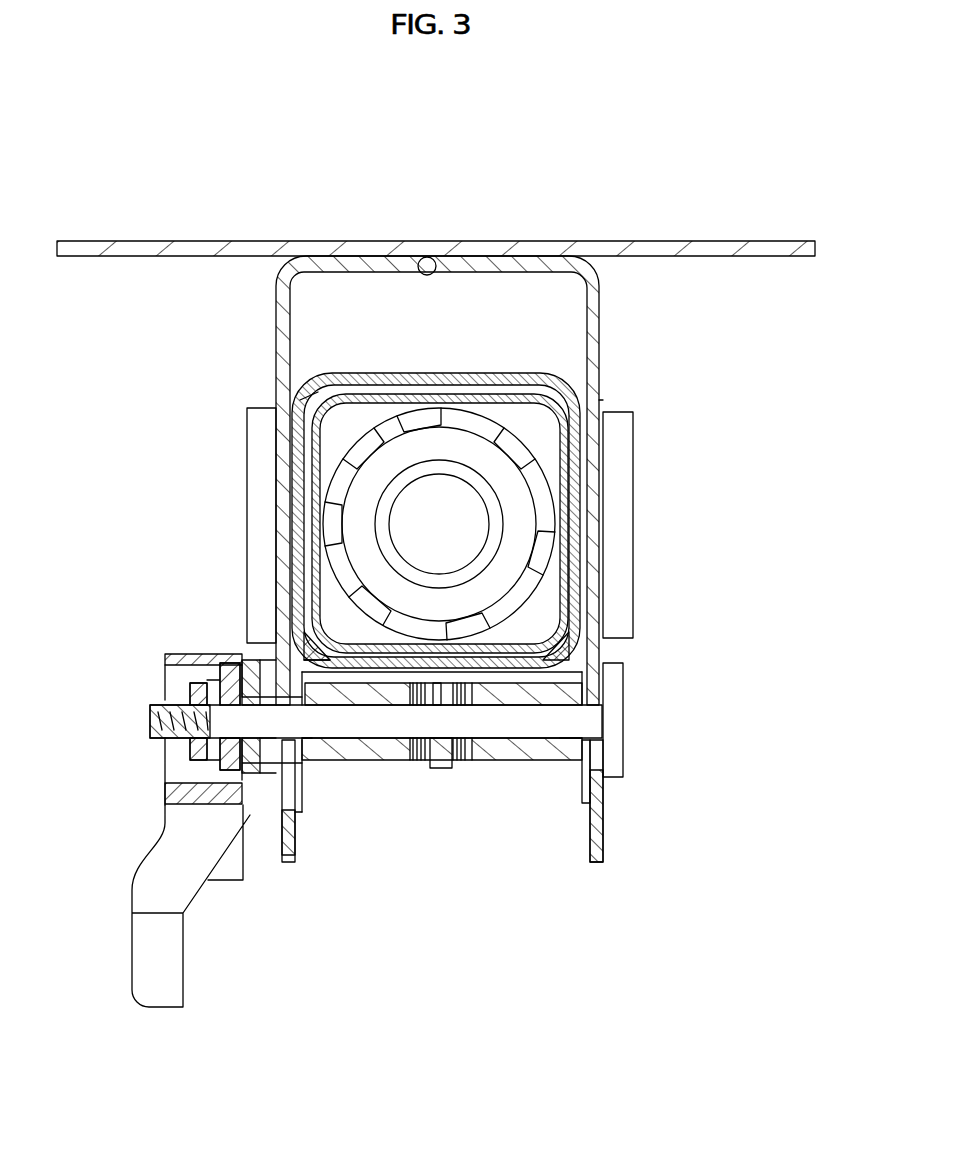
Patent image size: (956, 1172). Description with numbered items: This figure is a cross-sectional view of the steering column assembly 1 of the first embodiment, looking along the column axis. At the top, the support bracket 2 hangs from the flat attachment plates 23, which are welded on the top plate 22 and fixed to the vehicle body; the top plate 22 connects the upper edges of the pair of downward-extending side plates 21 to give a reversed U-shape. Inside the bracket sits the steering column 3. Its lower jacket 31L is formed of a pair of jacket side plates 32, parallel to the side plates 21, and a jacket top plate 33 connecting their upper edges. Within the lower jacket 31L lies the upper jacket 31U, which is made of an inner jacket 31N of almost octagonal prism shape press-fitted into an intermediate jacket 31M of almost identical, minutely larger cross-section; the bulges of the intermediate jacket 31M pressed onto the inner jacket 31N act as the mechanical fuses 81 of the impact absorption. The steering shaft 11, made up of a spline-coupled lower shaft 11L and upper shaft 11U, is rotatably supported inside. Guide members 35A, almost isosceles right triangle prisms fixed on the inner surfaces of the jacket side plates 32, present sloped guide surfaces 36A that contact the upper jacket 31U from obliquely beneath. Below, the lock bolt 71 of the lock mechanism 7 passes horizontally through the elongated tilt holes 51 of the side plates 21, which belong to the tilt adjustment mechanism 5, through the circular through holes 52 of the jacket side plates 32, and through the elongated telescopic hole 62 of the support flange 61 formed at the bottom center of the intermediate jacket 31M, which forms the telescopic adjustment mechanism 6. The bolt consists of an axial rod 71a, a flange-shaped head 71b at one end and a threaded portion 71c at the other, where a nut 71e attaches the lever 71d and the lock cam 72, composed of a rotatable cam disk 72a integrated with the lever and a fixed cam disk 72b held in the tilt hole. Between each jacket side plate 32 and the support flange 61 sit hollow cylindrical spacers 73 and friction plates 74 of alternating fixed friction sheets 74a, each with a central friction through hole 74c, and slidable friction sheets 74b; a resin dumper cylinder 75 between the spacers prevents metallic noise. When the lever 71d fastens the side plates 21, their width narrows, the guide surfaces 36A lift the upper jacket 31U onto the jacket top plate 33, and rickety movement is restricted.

The steering column assembly 1 is at (545, 152).
The support bracket 2 is at (512, 238).
The side plates 21 is at (275, 336).
The top plate 22 is at (422, 250).
The attachment plates 23 is at (672, 244).
The steering column 3 is at (566, 523).
The upper jacket 31U is at (550, 523).
The inner jacket 31N is at (572, 560).
The intermediate jacket 31M is at (568, 580).
The lower jacket 31L is at (575, 598).
The jacket side plates 32 is at (300, 800).
The jacket top plate 33 is at (483, 372).
The guide members 35A is at (270, 660).
The guide surface 36A is at (335, 632).
The steering shaft 11 is at (544, 524).
The lower shaft 11L is at (545, 497).
The upper shaft 11U is at (510, 520).
The tilt adjustment mechanism 5 is at (645, 690).
The elongated tilt holes 51 is at (285, 800).
The through holes 52 is at (312, 740).
The telescopic adjustment mechanism 6 is at (485, 770).
The support flange 61 is at (448, 765).
The elongated telescopic hole 62 is at (440, 768).
The lock mechanism 7 is at (175, 830).
The lock bolt 71 is at (404, 794).
The axial rod 71a is at (375, 740).
The head 71b is at (620, 738).
The threaded portion 71c is at (150, 722).
The lever 71d is at (140, 962).
The nut 71e is at (166, 758).
The lock cam 72 is at (183, 679).
The rotatable cam disk 72a is at (268, 668).
The fixed cam disk 72b is at (253, 637).
The spacers 73 is at (356, 760).
The friction plates 74 is at (443, 814).
The fixed friction sheets 74a is at (457, 768).
The slidable friction sheets 74b is at (470, 768).
The friction through hole 74c is at (410, 762).
The dumper cylinder 75 is at (452, 700).
The mechanical fuses 81 is at (300, 398).